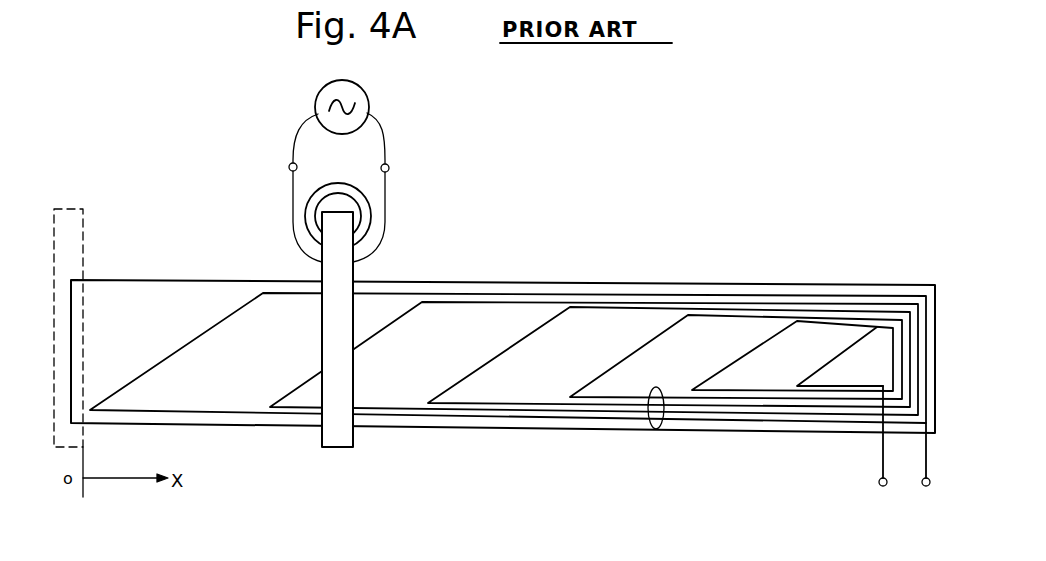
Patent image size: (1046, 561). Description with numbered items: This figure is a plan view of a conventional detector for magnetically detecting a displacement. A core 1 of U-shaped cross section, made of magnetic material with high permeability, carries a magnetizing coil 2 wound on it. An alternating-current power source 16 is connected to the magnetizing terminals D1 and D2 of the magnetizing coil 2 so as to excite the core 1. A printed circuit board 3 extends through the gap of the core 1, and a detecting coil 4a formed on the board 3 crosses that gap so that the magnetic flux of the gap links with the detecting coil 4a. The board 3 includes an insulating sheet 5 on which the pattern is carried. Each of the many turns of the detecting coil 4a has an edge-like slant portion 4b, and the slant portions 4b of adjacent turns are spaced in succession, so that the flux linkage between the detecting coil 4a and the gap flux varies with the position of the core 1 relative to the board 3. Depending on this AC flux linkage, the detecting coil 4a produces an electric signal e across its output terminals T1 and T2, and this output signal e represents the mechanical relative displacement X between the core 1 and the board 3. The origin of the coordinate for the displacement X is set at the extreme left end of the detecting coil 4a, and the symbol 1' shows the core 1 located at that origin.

The core 1 is at (372, 329).
The core at the origin of the coordinate 1' is at (89, 317).
The magnetizing coil 2 is at (386, 214).
The printed circuit board 3 is at (621, 272).
The detecting coil 4a is at (659, 429).
The slant portion 4b is at (592, 385).
The insulating sheet 5 is at (785, 283).
The alternating-current power source 16 is at (369, 99).
The magnetizing terminal D1 is at (277, 170).
The magnetizing terminal D2 is at (399, 171).
The output terminal T1 is at (880, 486).
The output terminal T2 is at (926, 486).
The electric signal e is at (900, 463).